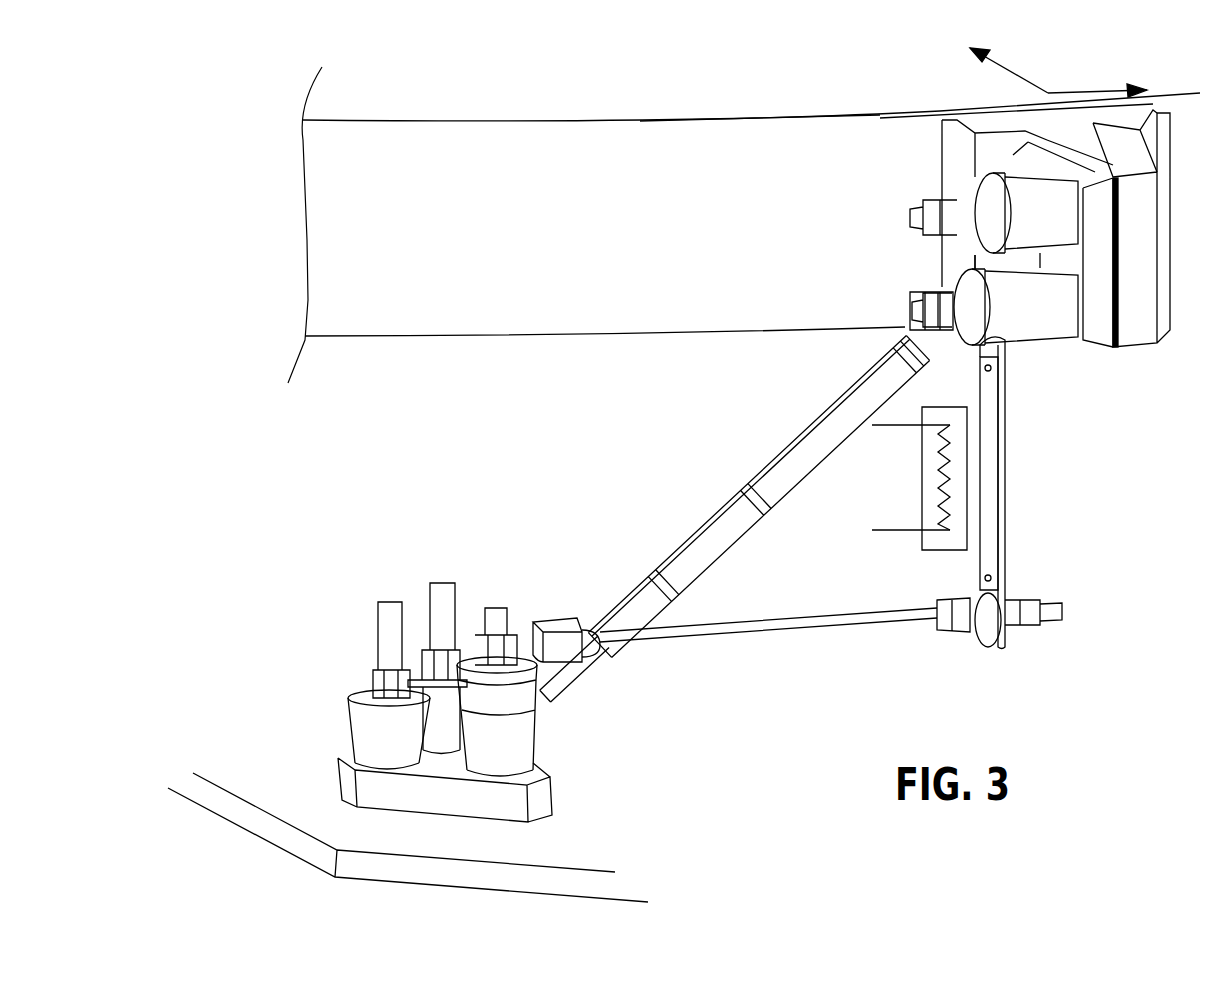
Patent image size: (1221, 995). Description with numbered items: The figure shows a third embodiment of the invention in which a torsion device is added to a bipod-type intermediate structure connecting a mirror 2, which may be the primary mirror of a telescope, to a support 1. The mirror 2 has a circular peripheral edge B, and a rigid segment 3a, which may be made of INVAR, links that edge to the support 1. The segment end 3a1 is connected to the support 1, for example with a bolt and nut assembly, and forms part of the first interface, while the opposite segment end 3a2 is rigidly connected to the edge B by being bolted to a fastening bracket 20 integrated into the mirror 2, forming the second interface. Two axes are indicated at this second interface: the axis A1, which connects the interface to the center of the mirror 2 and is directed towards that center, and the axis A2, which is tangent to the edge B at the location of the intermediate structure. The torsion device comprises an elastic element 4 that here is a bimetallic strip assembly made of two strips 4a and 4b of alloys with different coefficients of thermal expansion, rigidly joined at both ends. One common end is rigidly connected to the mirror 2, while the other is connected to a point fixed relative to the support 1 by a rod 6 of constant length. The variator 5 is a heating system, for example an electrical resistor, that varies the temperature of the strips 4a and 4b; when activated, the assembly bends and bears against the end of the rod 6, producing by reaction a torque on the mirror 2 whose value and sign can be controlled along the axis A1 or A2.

The support 1 is at (235, 808).
The mirror 2 is at (437, 320).
The peripheral edge B is at (637, 120).
The rigid segment 3a is at (735, 517).
The segment end 3a1 is at (555, 693).
The segment end 3a2 is at (912, 333).
The elastic element 4 is at (1050, 493).
The strip 4a is at (1086, 427).
The strip 4b is at (992, 418).
The variator 5 is at (920, 540).
The rod of constant length 6 is at (905, 618).
The fastening bracket 20 is at (1138, 332).
The axis A1 is at (1022, 78).
The axis A2 is at (1118, 87).